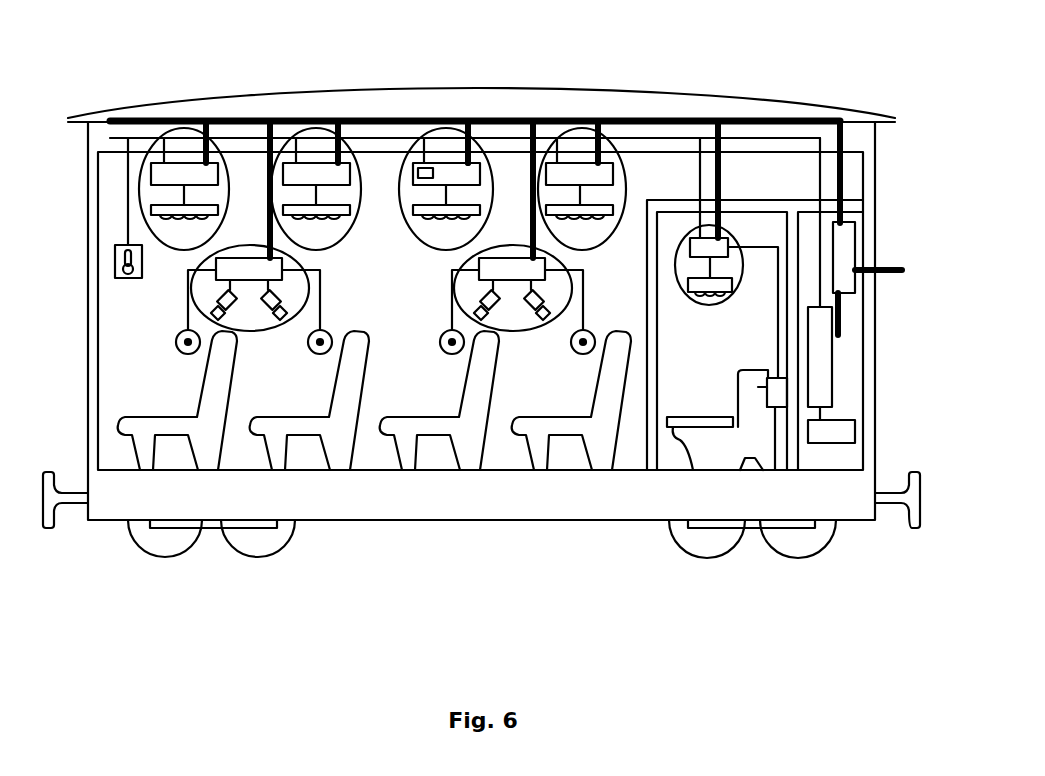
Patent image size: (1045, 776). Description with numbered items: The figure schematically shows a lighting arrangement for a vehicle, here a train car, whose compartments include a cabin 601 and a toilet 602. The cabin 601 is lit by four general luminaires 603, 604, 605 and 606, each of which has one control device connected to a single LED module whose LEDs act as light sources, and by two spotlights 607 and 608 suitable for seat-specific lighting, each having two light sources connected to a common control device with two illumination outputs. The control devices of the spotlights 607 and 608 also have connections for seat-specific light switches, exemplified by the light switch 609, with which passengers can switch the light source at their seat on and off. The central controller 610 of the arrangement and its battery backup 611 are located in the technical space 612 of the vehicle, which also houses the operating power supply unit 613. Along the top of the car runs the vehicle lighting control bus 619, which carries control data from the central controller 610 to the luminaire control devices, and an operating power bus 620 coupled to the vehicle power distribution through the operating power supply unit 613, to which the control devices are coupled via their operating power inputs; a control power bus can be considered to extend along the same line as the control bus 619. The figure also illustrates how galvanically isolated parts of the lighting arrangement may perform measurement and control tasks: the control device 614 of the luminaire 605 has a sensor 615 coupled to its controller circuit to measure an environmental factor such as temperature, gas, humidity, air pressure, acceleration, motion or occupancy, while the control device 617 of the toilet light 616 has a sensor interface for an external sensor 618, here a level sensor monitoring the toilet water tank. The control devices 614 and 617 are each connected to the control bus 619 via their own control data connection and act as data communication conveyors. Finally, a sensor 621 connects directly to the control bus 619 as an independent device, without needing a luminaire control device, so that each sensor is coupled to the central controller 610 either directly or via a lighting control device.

The cabin 601 is at (480, 457).
The toilet 602 is at (667, 457).
The general luminaire 603 is at (186, 130).
The general luminaire 604 is at (318, 130).
The general luminaire 605 is at (447, 130).
The general luminaire 606 is at (583, 130).
The spotlight 607 is at (270, 333).
The spotlight 608 is at (537, 333).
The light switch 609 is at (180, 355).
The central controller 610 is at (832, 358).
The battery backup 611 is at (855, 432).
The technical space 612 is at (842, 457).
The operating power supply unit 613 is at (855, 245).
The control device 614 is at (475, 163).
The sensor 615 is at (413, 167).
The toilet light 616 is at (702, 223).
The control device 617 is at (725, 230).
The external sensor 618 is at (765, 398).
The control bus 619 is at (762, 137).
The operating power bus 620 is at (835, 118).
The sensor 621 is at (115, 260).